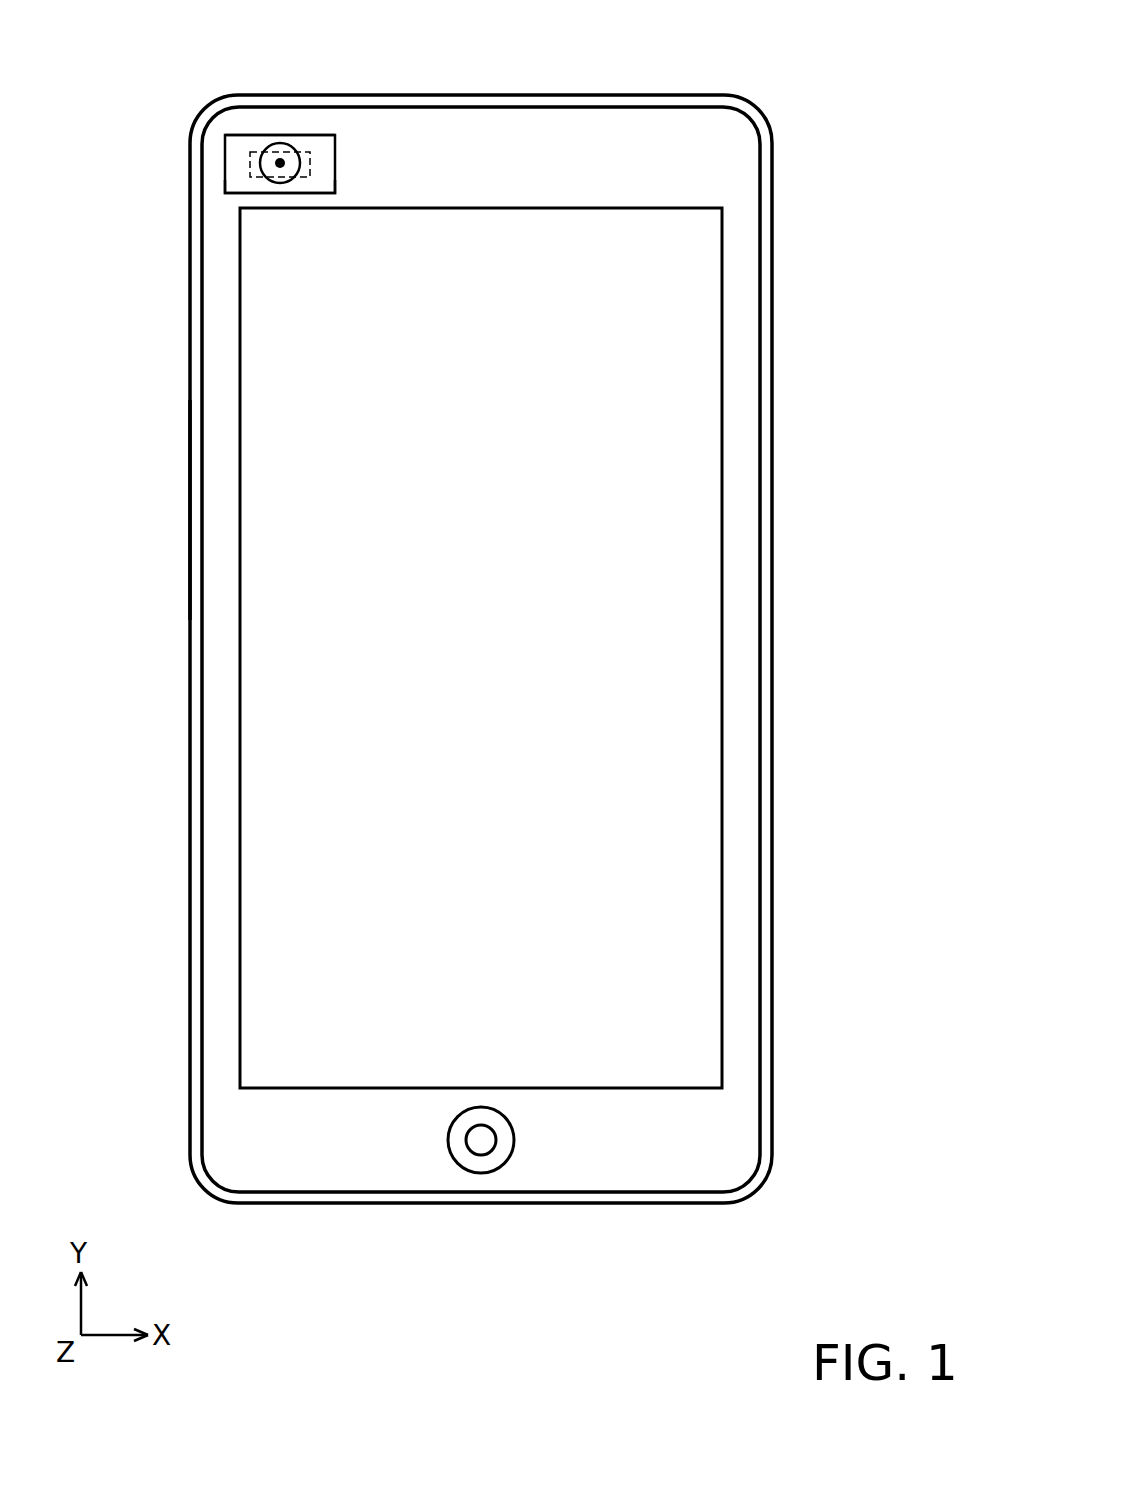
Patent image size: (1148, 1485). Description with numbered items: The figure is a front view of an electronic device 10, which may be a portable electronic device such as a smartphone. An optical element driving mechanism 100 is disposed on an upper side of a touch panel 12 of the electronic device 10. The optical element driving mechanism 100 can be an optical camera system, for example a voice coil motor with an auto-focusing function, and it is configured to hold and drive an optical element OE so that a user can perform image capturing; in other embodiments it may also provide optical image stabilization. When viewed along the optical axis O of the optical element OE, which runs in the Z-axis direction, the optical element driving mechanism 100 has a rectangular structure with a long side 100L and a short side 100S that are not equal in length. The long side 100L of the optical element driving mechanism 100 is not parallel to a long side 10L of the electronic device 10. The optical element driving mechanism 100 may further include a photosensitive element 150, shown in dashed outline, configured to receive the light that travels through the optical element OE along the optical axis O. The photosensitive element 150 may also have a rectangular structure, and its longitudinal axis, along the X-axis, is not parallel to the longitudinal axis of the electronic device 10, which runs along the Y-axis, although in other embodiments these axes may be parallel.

The electronic device 10 is at (628, 95).
The long side of the electronic device 10L is at (190, 510).
The touch panel 12 is at (323, 673).
The optical element driving mechanism 100 is at (222, 148).
The short side of the optical element driving mechanism 100S is at (225, 180).
The long side of the optical element driving mechanism 100L is at (307, 135).
The optical element OE is at (280, 163).
The optical axis O is at (280, 163).
The photosensitive element 150 is at (310, 163).